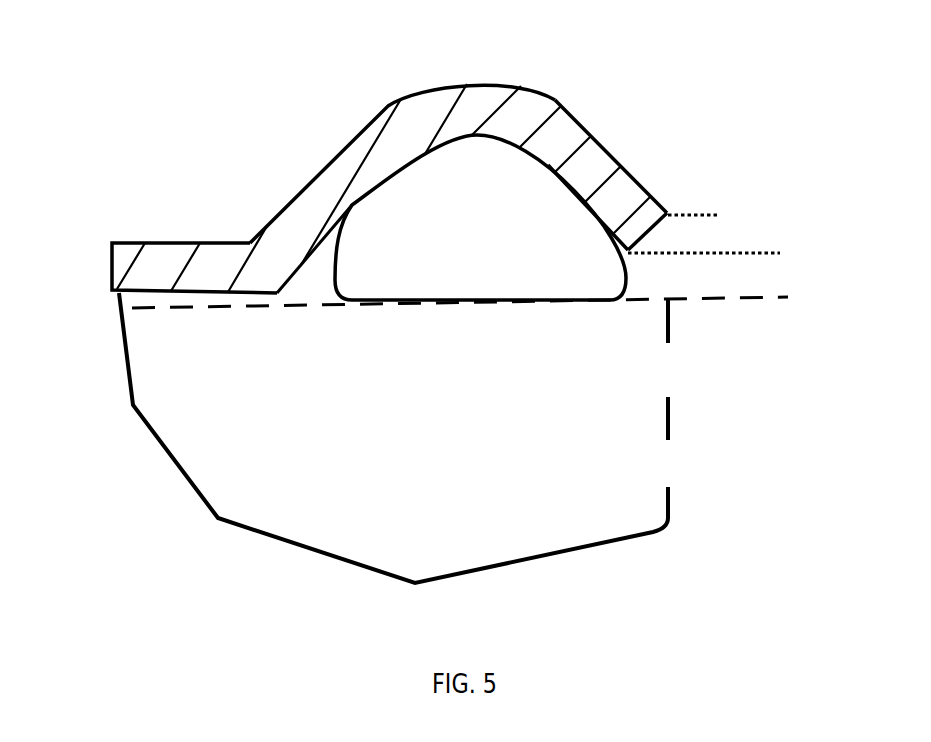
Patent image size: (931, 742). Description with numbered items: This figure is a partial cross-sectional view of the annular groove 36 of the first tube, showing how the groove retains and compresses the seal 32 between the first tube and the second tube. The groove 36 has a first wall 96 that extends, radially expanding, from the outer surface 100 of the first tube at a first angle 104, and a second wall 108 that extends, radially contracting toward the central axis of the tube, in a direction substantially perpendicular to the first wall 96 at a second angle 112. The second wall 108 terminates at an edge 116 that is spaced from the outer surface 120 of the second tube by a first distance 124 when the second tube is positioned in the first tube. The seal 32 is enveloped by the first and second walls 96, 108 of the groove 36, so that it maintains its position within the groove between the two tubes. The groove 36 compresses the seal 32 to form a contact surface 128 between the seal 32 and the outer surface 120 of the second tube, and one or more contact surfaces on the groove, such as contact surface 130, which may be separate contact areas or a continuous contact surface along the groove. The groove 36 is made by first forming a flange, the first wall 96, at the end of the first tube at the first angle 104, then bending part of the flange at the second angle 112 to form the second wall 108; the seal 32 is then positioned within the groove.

The seal 32 is at (420, 187).
The annular groove 36 is at (340, 227).
The first wall 96 is at (333, 162).
The outer surface of the first tube 100 is at (172, 243).
The first angle 104 is at (291, 214).
The second wall 108 is at (593, 142).
The second angle 112 is at (687, 211).
The edge 116 is at (648, 232).
The outer surface of the second tube 120 is at (625, 302).
The first distance 124 is at (707, 259).
The contact surface 128 is at (500, 302).
The contact surface 130 is at (475, 137).